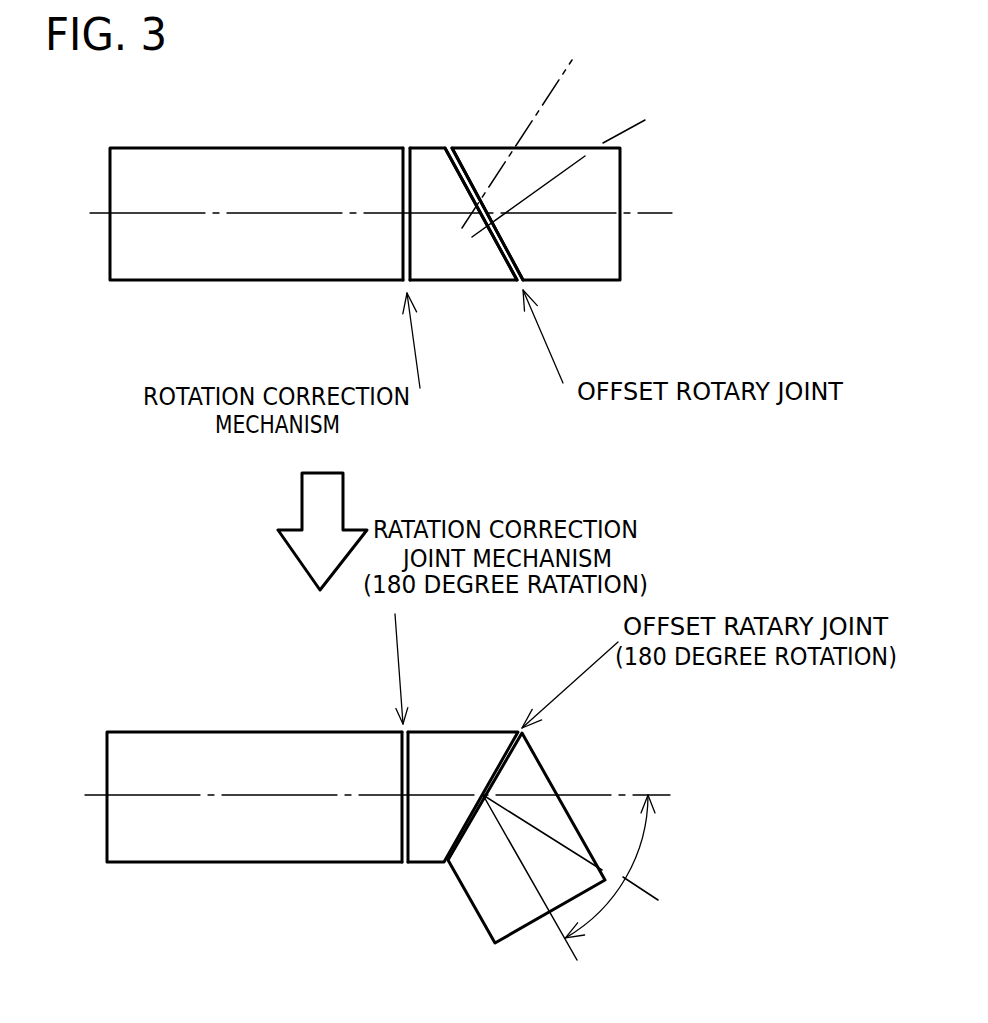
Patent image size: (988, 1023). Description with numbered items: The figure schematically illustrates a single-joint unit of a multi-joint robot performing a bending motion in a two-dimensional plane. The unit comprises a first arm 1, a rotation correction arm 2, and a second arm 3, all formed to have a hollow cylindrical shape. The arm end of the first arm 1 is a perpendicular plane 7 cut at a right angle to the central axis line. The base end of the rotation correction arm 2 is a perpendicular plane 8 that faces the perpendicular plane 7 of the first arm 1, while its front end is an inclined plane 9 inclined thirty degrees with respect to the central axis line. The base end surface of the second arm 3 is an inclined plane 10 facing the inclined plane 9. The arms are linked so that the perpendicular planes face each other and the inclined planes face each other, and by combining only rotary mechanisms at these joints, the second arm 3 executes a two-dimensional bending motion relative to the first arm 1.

The first arm 1 is at (141, 169).
The rotation correction arm 2 is at (423, 168).
The second arm 3 is at (603, 181).
The perpendicular plane 7 is at (405, 188).
The perpendicular plane 8 is at (410, 248).
The inclined plane 9 is at (516, 272).
The inclined plane 10 is at (503, 237).